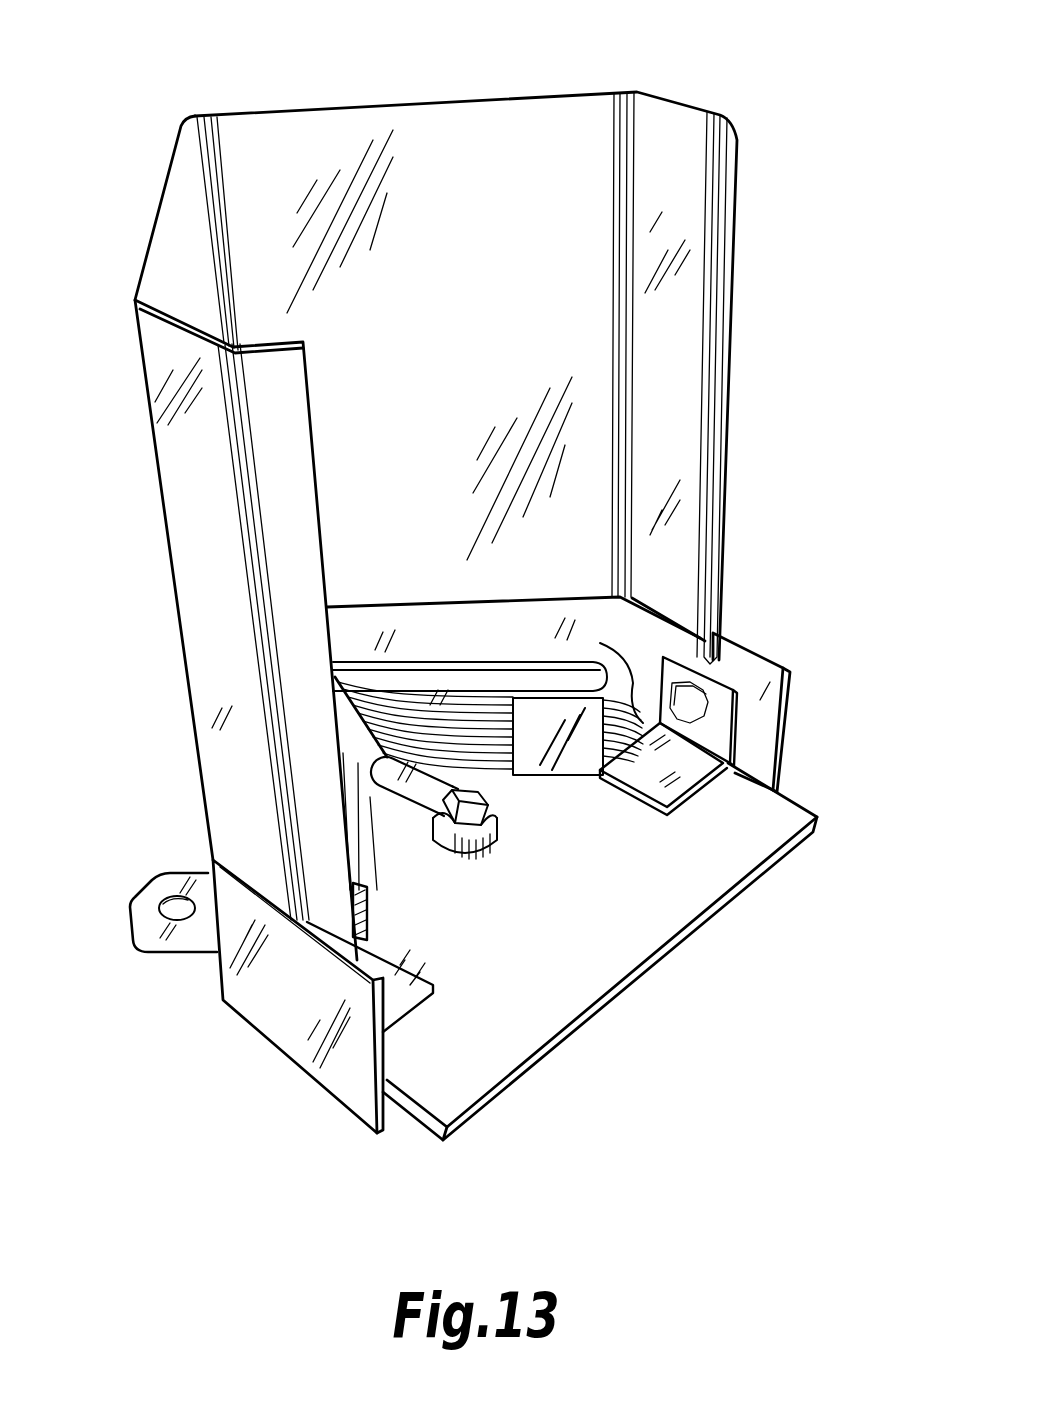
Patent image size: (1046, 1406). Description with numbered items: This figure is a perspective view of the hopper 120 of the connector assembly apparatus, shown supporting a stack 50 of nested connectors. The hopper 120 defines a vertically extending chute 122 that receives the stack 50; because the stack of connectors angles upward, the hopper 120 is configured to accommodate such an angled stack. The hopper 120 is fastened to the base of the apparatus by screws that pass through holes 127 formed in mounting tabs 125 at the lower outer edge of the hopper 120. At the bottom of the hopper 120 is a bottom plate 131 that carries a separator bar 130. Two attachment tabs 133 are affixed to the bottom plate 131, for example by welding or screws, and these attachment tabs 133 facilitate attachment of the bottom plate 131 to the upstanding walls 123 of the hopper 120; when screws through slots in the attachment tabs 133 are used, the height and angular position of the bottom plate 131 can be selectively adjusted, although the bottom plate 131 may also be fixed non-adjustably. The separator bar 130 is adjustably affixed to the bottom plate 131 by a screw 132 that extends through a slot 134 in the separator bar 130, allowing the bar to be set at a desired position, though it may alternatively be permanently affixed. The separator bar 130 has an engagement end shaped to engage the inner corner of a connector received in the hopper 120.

The hopper 120 is at (744, 227).
The chute 122 is at (500, 118).
The upstanding walls 123 is at (767, 748).
The mounting tabs 125 is at (188, 942).
The holes 127 is at (175, 906).
The stack of connectors 50 is at (633, 683).
The separator bar 130 is at (462, 778).
The bottom plate 131 is at (660, 957).
The screw 132 is at (433, 819).
The attachment tabs 133 is at (690, 778).
The slot 134 is at (480, 822).